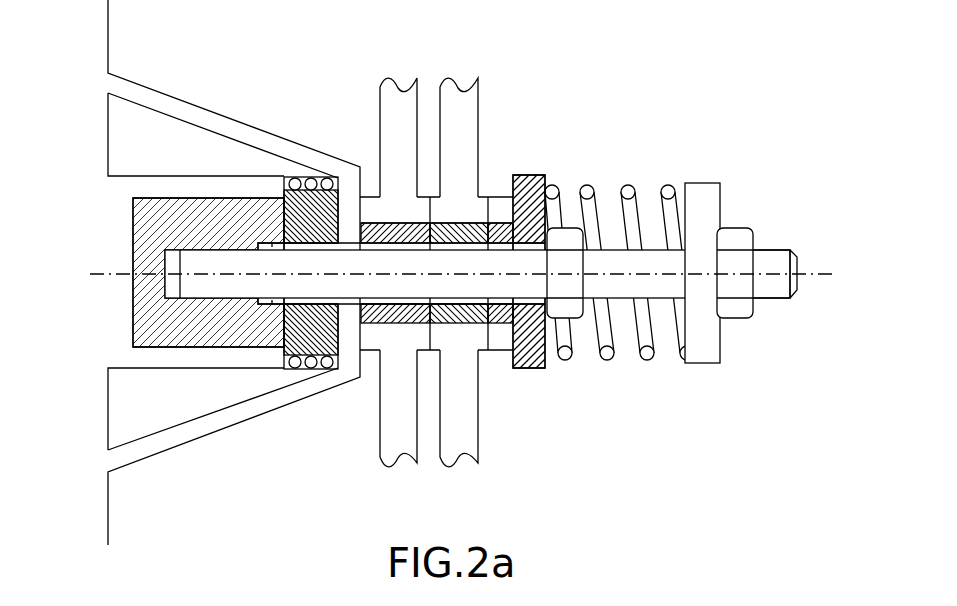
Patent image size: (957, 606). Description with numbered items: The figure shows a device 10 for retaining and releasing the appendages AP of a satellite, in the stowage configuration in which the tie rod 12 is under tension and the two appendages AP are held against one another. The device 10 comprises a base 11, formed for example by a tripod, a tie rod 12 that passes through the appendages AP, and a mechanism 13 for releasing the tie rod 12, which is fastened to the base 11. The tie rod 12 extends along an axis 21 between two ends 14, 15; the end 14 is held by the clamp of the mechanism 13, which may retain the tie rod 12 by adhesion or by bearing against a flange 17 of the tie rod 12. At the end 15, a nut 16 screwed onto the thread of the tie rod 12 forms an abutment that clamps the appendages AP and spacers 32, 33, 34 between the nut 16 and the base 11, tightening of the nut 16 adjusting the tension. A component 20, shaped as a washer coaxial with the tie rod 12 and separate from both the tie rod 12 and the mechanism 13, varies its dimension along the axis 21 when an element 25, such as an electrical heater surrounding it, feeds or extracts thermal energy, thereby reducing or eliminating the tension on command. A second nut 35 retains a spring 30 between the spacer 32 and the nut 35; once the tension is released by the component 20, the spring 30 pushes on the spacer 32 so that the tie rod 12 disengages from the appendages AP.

The device 10 is at (655, 414).
The base 11 is at (165, 105).
The tie rod 12 is at (528, 373).
The mechanism for releasing the tie rod 13 is at (150, 233).
The end of the tie rod 14 is at (193, 285).
The end of the tie rod 15 is at (773, 258).
The nut 16 is at (568, 238).
The flange 17 is at (267, 302).
The component 20 is at (320, 185).
The axis 21 is at (826, 276).
The element for feeding thermal energy 25 is at (313, 365).
The spring 30 is at (627, 193).
The spacer 32 is at (525, 185).
The spacer 33 is at (458, 322).
The spacer 34 is at (393, 322).
The second nut 35 is at (703, 197).
The appendages AP is at (458, 95).